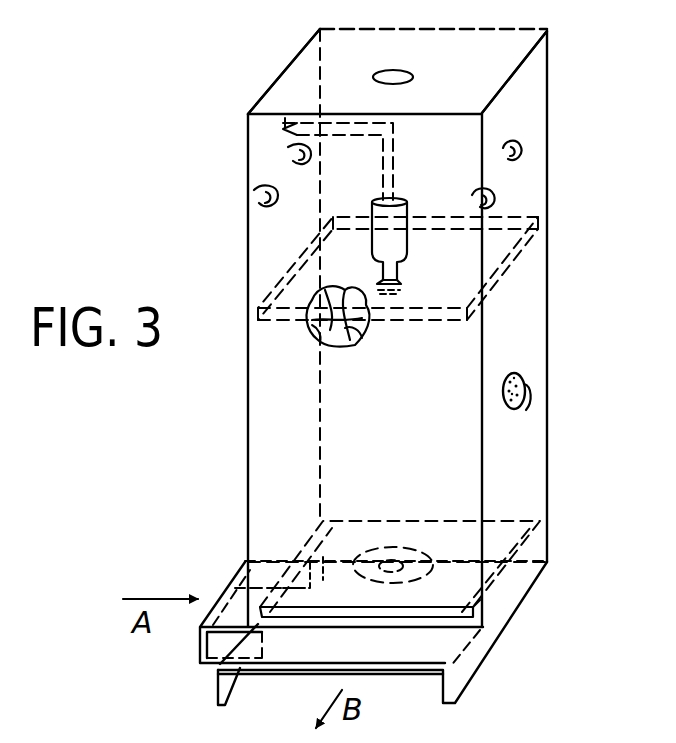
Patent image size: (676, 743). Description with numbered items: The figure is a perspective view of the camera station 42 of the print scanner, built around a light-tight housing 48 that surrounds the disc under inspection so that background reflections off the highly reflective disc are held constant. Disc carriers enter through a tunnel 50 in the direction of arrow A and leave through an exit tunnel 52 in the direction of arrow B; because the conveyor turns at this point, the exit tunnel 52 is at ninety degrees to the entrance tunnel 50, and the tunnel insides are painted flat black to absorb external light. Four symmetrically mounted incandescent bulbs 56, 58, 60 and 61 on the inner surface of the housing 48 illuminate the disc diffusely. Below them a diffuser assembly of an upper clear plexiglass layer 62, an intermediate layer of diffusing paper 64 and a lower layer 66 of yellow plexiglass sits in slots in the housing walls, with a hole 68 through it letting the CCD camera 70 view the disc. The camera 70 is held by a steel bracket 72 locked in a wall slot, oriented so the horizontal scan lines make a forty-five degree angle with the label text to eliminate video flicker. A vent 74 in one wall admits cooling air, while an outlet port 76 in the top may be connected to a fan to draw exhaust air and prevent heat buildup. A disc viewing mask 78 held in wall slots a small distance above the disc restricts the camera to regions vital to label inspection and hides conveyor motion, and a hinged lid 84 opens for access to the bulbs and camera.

The camera station 42 is at (571, 316).
The light-tight housing 48 is at (540, 275).
The tunnel 50 is at (231, 598).
The exit tunnel 52 is at (312, 654).
The incandescent bulb 56 is at (254, 186).
The incandescent bulb 58 is at (286, 143).
The incandescent bulb 60 is at (525, 148).
The incandescent bulb 61 is at (496, 197).
The upper clear plexiglass layer 62 is at (340, 287).
The intermediate layer of diffusing paper 64 is at (350, 333).
The lower layer of yellow plexiglass 66 is at (315, 340).
The hole 68 is at (402, 290).
The CCD camera 70 is at (406, 204).
The bracket 72 is at (403, 150).
The vent 74 is at (514, 415).
The outlet port 76 is at (400, 74).
The disc viewing mask 78 is at (388, 617).
The hinged lid 84 is at (427, 71).